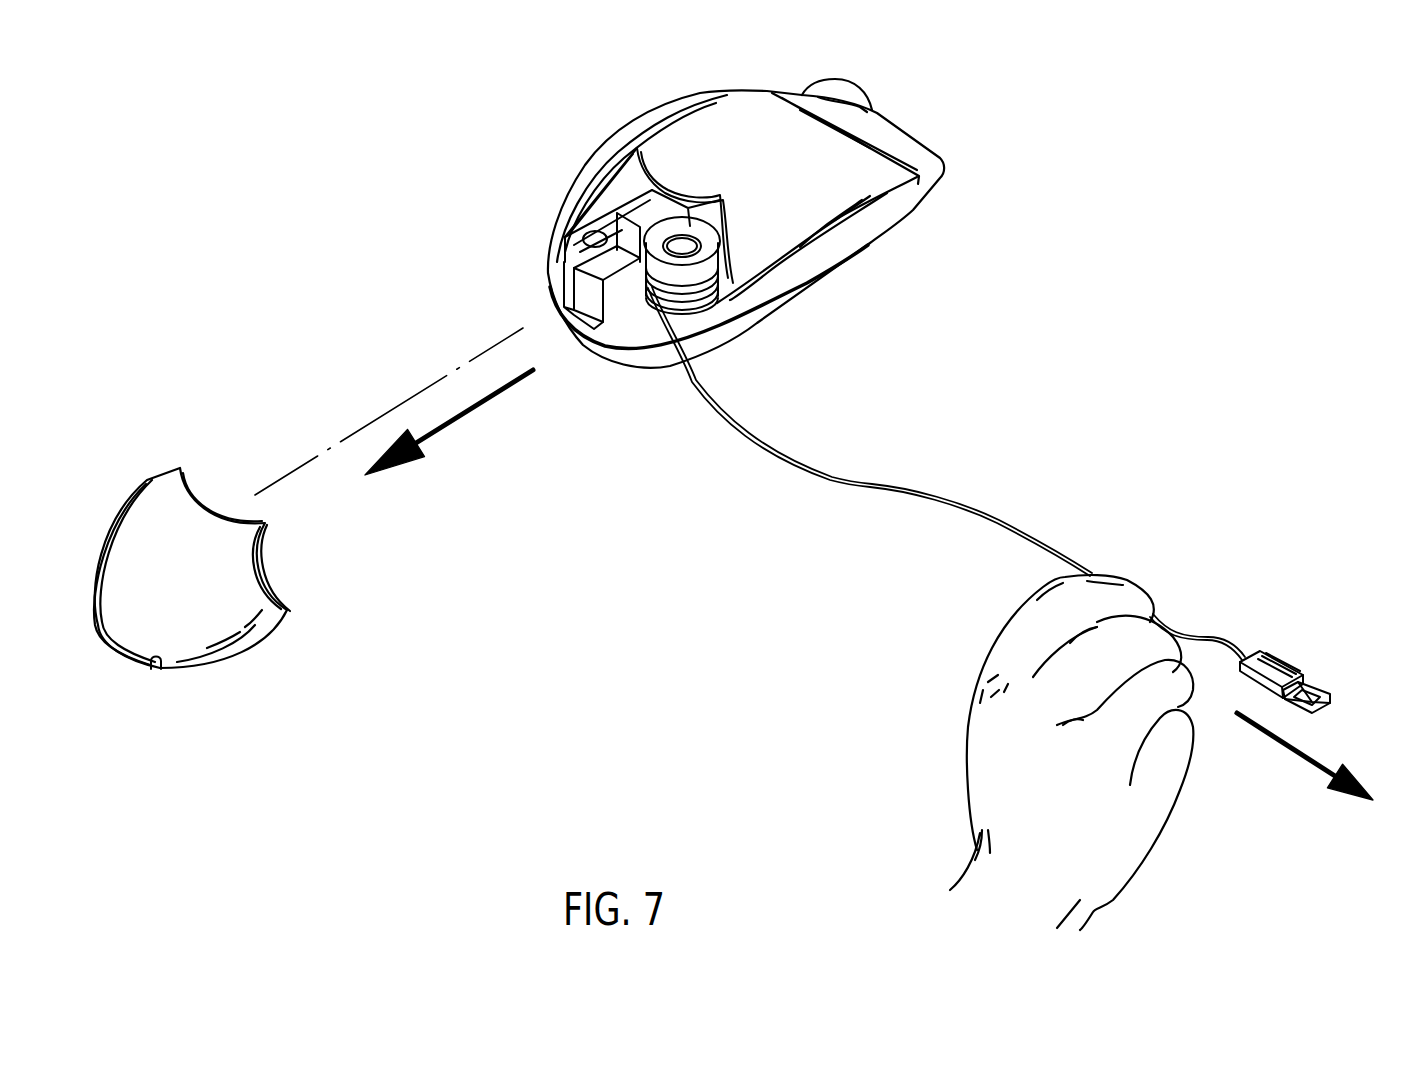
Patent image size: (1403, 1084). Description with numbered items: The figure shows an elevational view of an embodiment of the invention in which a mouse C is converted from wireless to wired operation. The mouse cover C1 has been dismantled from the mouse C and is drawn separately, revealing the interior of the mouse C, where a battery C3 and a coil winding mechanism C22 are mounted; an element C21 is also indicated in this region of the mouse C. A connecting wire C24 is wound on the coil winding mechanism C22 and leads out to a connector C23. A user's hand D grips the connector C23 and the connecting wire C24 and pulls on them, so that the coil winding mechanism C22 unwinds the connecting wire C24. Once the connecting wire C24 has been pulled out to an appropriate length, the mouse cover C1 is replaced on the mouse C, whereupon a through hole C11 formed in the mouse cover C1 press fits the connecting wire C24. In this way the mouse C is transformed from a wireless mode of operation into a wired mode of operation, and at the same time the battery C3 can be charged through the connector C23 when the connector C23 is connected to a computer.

The mouse C is at (948, 253).
The mouse cover C1 is at (227, 597).
The through hole C11 is at (160, 667).
The battery C3 is at (607, 215).
The post C21 is at (578, 260).
The coil winding mechanism C22 is at (712, 282).
The connector C23 is at (1273, 660).
The connecting wire C24 is at (870, 483).
The hand D is at (1007, 790).